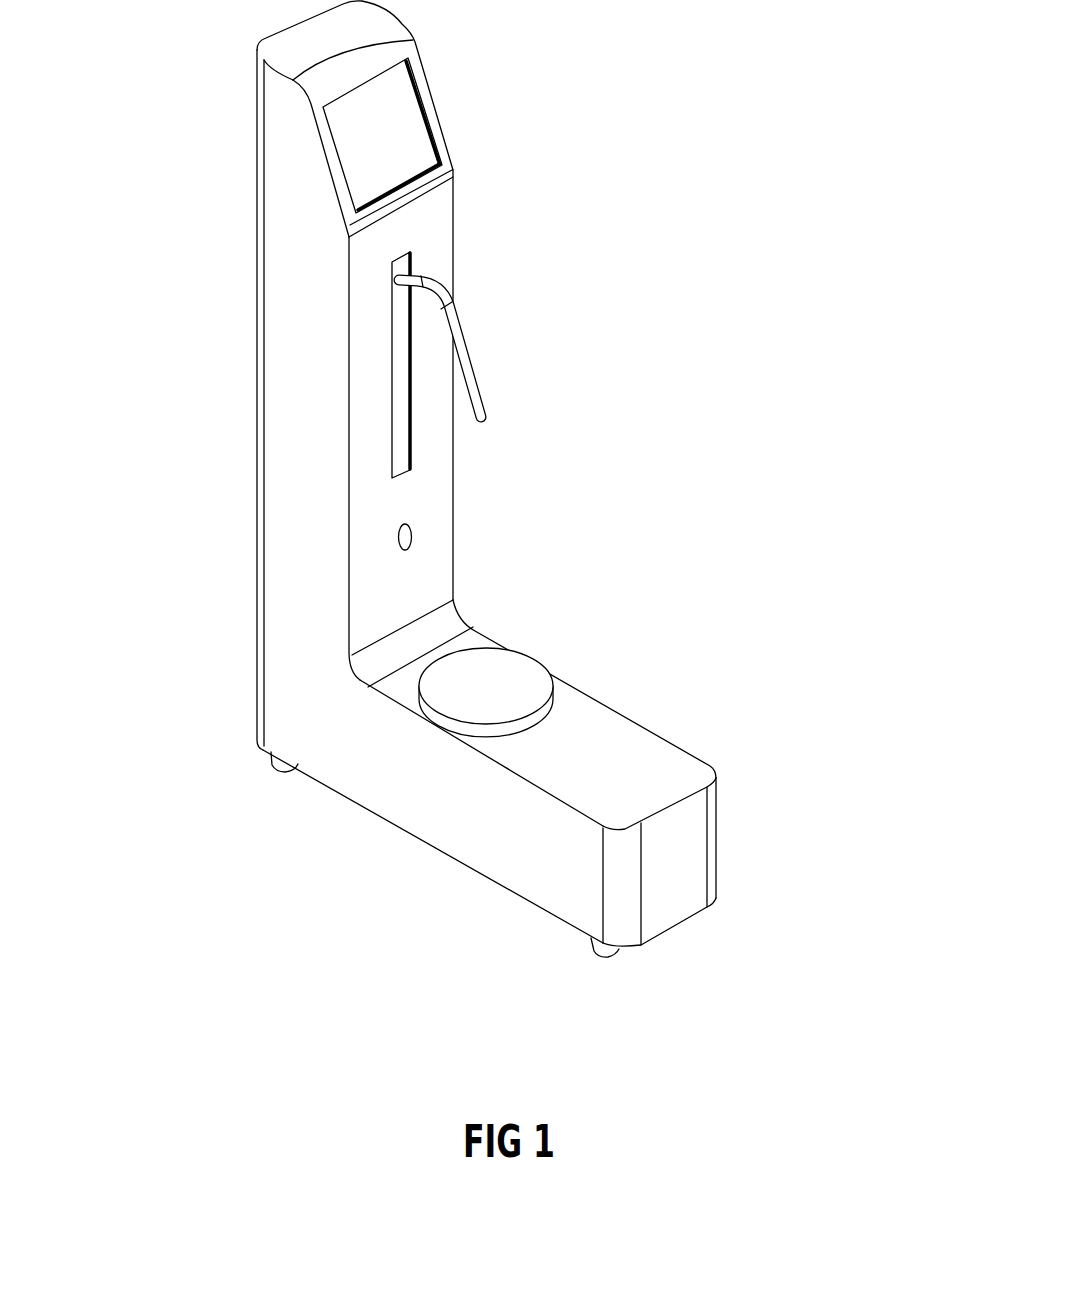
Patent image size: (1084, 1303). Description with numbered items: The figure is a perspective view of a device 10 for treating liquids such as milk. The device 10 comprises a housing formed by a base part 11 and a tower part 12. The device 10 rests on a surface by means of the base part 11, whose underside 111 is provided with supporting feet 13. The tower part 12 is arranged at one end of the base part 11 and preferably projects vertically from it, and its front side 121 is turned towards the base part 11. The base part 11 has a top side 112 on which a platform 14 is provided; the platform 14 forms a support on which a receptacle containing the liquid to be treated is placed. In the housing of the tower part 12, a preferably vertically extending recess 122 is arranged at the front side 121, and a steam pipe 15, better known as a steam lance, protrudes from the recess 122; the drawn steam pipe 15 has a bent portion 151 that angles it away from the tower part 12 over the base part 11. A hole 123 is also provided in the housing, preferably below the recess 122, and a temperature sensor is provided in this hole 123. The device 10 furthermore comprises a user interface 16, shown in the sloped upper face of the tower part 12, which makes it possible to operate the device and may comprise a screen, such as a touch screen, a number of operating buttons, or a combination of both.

The device 10 is at (676, 126).
The base part 11 is at (717, 817).
The underside 111 is at (431, 858).
The top side 112 is at (648, 751).
The tower part 12 is at (256, 365).
The front side 121 is at (438, 240).
The recess 122 is at (413, 440).
The hole 123 is at (413, 537).
The supporting feet 13 is at (600, 958).
The platform 14 is at (514, 678).
The steam pipe 15 is at (465, 345).
The bent portion of lever 151 is at (492, 430).
The user interface 16 is at (399, 133).